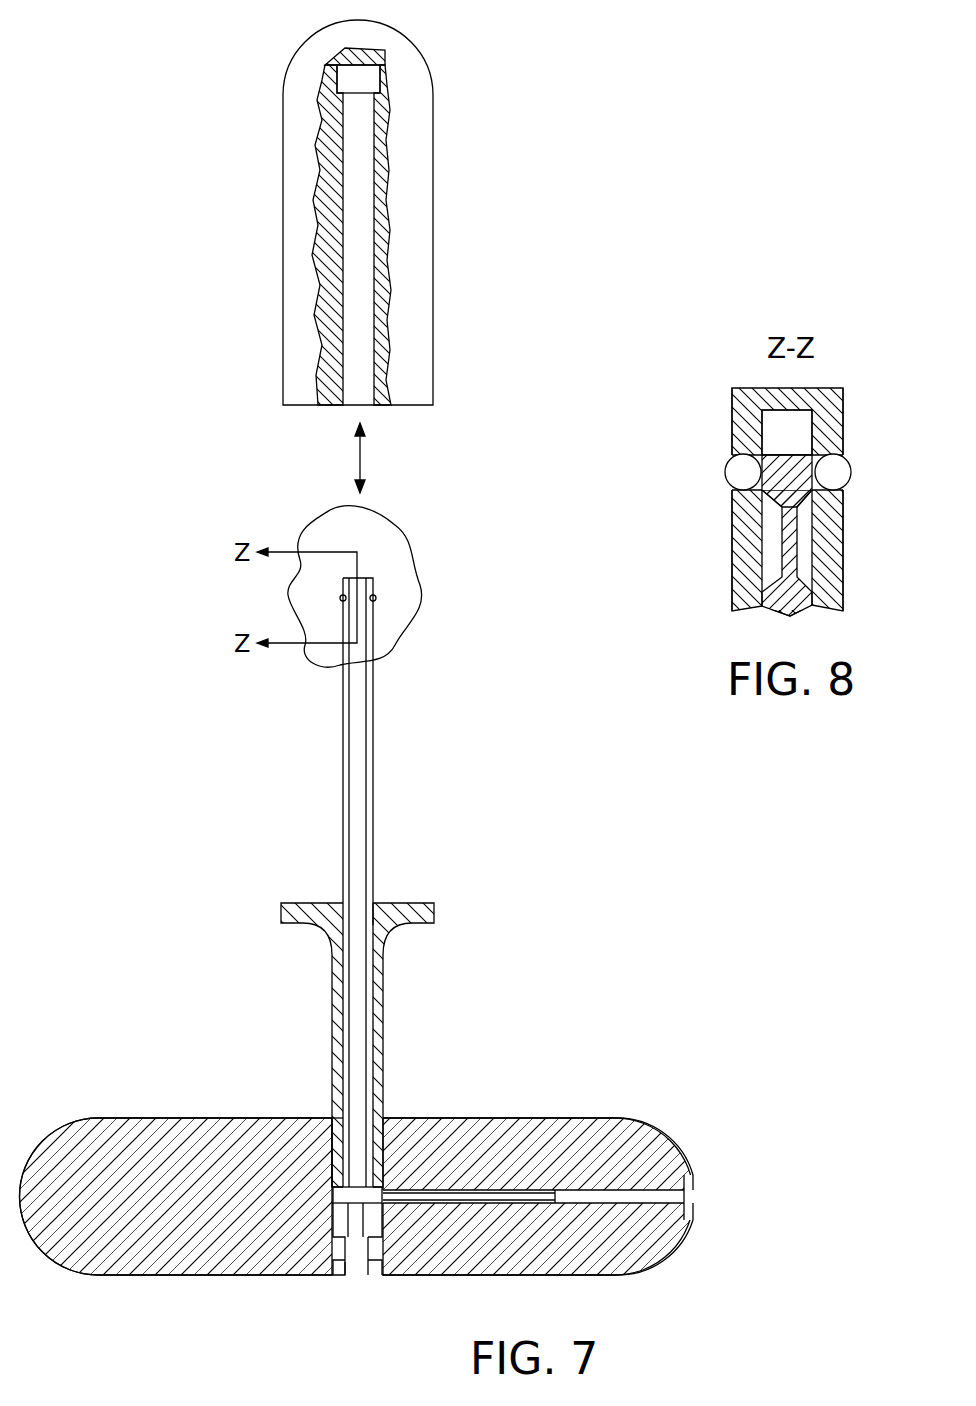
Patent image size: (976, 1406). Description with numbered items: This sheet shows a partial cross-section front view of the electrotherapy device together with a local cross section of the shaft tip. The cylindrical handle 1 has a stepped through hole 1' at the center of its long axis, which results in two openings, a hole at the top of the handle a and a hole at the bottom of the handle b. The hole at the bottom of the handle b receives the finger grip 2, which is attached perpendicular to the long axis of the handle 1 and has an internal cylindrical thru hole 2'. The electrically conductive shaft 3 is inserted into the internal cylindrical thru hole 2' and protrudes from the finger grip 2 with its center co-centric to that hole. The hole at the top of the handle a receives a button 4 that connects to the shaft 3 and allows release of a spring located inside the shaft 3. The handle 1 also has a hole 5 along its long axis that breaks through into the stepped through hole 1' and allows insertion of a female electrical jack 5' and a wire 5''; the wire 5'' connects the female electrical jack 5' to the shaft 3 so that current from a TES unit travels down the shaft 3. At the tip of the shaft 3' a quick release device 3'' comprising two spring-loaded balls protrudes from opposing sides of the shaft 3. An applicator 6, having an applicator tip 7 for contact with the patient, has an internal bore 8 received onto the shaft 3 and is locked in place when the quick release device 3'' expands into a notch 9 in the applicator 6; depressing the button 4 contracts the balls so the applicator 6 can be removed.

In FIG. 7, the handle 1 is at (357, 1164).
In FIG. 7, the stepped through hole 1' is at (414, 1128).
In FIG. 7, the finger grip 2 is at (387, 1045).
In FIG. 7, the internal cylindrical thru hole 2' is at (418, 883).
In FIG. 7, the shaft 3 is at (410, 740).
In FIG. 7, the tip of the shaft 3' is at (407, 586).
In FIG. 8, the quick release device 3'' is at (834, 368).
In FIG. 7, the button 4 is at (356, 1258).
In FIG. 7, the hole 5 is at (619, 1259).
In FIG. 7, the female electrical jack 5' is at (700, 1249).
In FIG. 7, the wire 5'' is at (469, 1128).
In FIG. 7, the applicator 6 is at (417, 360).
In FIG. 7, the applicator tip 7 is at (382, 38).
In FIG. 7, the internal bore 8 is at (355, 252).
In FIG. 7, the notch 9 is at (370, 80).
In FIG. 7, the hole at the top of the handle a is at (330, 1283).
In FIG. 7, the hole at the bottom of the handle b is at (327, 1107).